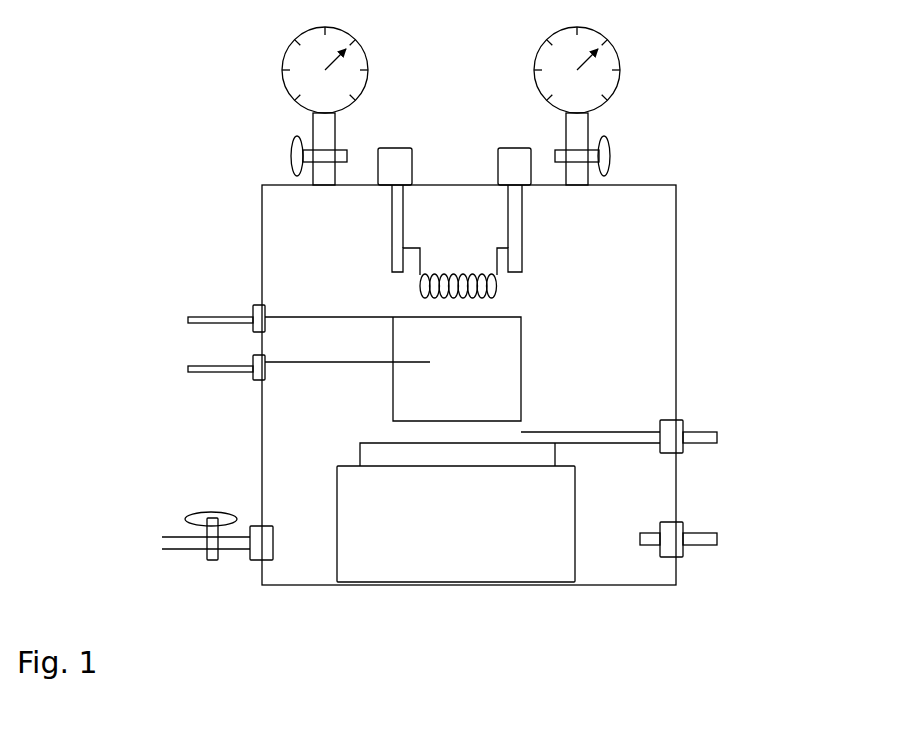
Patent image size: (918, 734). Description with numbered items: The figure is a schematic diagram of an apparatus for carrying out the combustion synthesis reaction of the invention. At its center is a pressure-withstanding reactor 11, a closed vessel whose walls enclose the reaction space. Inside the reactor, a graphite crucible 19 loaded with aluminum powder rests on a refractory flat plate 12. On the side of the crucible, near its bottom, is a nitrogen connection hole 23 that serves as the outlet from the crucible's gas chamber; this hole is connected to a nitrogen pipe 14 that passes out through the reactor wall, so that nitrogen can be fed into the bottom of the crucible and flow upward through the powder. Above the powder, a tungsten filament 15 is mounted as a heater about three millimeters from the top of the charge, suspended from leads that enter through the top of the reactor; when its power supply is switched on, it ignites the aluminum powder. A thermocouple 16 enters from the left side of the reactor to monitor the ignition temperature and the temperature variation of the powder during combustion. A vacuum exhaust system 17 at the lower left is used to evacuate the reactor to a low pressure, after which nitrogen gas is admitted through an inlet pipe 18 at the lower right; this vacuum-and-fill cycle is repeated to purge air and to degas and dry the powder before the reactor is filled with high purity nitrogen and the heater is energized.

The pressure-withstanding reactor 11 is at (681, 308).
The refractory flat plate 12 is at (354, 449).
The nitrogen pipe 14 is at (742, 433).
The tungsten filament 15 is at (398, 288).
The thermocouple 16 is at (174, 350).
The vacuum exhaust system 17 is at (146, 556).
The inlet pipe 18 is at (729, 532).
The graphite crucible 19 is at (523, 314).
The nitrogen connection hole 23 is at (535, 418).